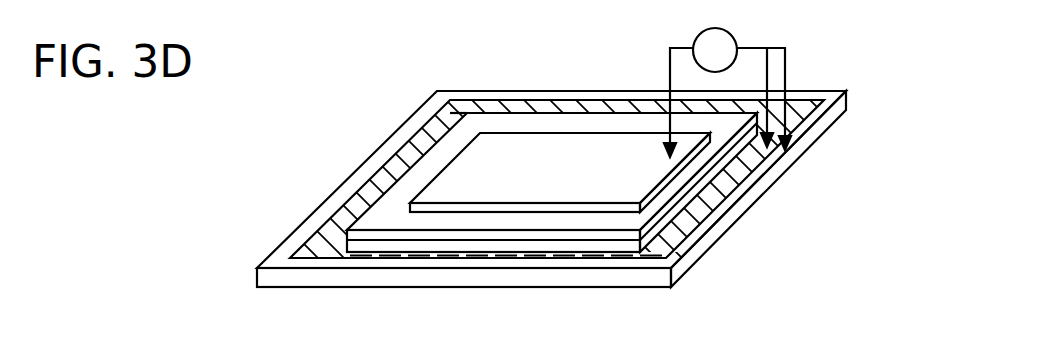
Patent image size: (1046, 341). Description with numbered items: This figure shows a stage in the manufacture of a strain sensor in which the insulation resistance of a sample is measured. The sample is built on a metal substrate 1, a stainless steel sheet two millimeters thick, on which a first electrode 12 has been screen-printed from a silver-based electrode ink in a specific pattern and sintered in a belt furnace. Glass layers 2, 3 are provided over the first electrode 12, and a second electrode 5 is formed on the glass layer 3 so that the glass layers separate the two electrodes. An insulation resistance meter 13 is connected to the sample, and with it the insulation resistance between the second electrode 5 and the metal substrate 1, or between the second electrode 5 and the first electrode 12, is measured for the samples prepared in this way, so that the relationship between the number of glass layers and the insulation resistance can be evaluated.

The metal substrate 1 is at (690, 267).
The glass layer 2 is at (682, 212).
The glass layer 3 is at (680, 182).
The second electrode 5 is at (673, 160).
The first electrode 12 is at (851, 93).
The insulation resistance meter 13 is at (740, 43).